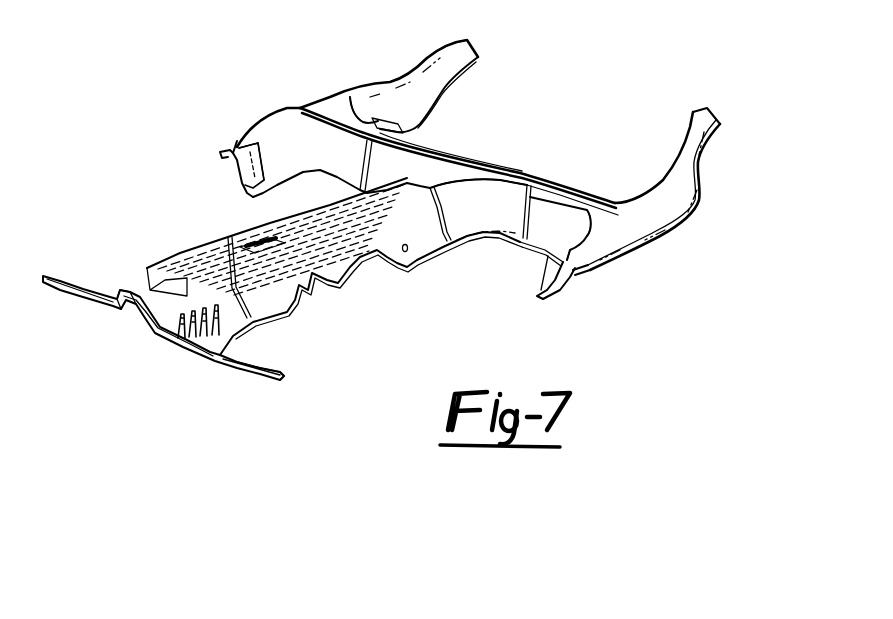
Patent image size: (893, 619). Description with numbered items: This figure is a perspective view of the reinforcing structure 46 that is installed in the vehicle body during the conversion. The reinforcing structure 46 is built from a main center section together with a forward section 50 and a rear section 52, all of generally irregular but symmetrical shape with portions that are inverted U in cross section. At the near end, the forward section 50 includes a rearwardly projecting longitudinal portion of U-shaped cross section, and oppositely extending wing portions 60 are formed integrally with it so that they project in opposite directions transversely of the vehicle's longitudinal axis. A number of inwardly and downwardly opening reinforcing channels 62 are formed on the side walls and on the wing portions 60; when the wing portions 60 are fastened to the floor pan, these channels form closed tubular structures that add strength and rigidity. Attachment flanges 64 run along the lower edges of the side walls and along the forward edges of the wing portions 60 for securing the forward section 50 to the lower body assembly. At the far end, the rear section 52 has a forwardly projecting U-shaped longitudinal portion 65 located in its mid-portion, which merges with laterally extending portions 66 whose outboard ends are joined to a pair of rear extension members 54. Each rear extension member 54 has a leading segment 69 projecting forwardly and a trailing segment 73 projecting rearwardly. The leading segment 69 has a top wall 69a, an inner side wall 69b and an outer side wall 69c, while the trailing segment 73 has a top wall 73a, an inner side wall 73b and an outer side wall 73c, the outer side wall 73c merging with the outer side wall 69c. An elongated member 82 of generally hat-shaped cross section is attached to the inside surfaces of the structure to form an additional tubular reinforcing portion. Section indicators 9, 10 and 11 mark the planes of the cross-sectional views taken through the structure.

The reinforcing structure 46 is at (152, 160).
The forward section 50 is at (234, 365).
The rear section 52 is at (447, 167).
The rear extension members 54 is at (349, 68).
The wing portions 60 is at (60, 275).
The reinforcing channels 62 is at (137, 317).
The attachment flanges 64 is at (92, 293).
The longitudinal portion 65 is at (470, 197).
The laterally extending portions 66 is at (405, 172).
The leading segment 69 is at (234, 149).
The top wall 69a is at (247, 147).
The inner side wall 69b is at (256, 156).
The outer side wall 69c is at (222, 151).
The trailing segment 73 is at (470, 40).
The top wall 73a is at (443, 55).
The inner side wall 73b is at (487, 44).
The outer side wall 73c is at (680, 207).
The elongated members 82 is at (347, 247).
The section line 9 is at (183, 245).
The section line 10 is at (257, 223).
The section line 11 is at (300, 187).